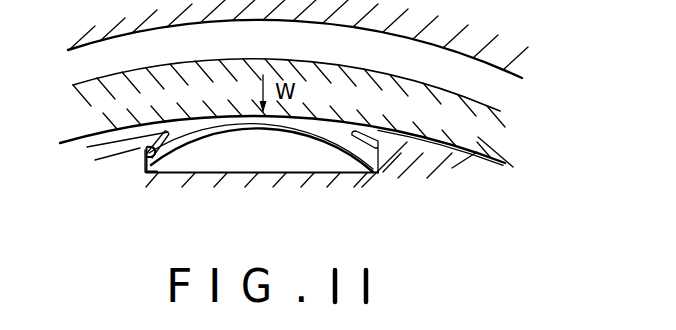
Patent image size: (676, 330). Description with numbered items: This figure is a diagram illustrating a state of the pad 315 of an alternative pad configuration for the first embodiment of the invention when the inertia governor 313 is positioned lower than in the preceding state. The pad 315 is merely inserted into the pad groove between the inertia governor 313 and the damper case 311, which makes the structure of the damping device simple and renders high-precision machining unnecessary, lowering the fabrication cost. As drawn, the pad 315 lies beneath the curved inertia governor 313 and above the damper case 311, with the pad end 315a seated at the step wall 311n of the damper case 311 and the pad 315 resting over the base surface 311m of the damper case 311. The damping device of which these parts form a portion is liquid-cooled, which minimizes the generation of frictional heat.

The damper case 311 is at (466, 37).
The inertia governor 313 is at (498, 109).
The pad 315 is at (340, 145).
The bent end of leaf spring 315a is at (148, 180).
The step wall of housing 311n is at (144, 164).
The base surface of housing 311m is at (187, 172).